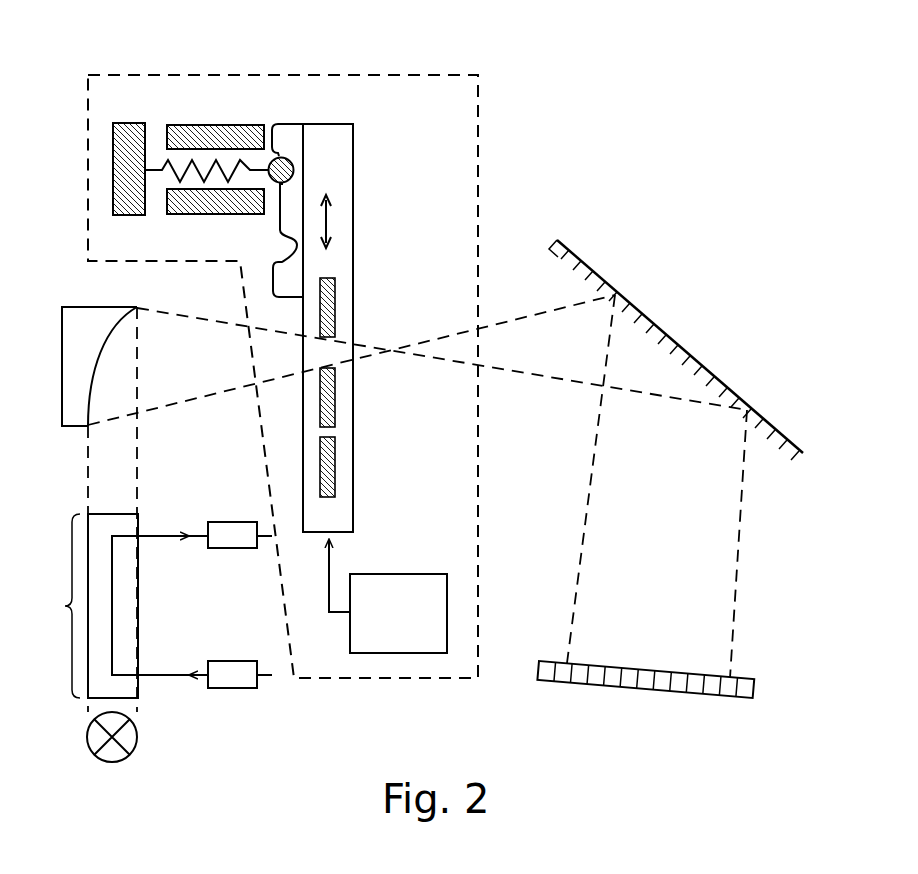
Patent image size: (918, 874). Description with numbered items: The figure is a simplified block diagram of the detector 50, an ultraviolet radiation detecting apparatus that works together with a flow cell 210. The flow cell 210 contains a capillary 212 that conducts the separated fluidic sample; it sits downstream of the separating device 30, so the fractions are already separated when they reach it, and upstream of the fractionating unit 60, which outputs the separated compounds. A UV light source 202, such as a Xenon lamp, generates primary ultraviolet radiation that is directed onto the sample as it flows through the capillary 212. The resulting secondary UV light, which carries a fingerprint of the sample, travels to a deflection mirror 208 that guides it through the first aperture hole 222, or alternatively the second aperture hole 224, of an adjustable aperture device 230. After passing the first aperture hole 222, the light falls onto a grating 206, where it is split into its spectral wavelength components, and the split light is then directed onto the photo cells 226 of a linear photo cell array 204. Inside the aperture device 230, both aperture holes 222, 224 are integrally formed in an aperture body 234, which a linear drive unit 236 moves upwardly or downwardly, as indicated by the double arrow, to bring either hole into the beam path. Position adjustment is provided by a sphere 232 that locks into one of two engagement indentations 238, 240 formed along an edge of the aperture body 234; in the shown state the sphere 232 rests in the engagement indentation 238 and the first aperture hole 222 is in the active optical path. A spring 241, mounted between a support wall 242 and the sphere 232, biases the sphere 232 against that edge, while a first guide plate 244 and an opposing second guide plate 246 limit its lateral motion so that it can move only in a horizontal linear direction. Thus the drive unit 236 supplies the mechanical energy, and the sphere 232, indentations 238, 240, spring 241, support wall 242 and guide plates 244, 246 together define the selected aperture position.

The aperture device 230 is at (480, 88).
The support wall 242 is at (123, 155).
The first guide plate 244 is at (249, 132).
The second guide plate 246 is at (177, 212).
The spring 241 is at (189, 160).
The sphere 232 is at (288, 160).
The engagement indentation 238 is at (302, 170).
The engagement indentation 240 is at (292, 252).
The first aperture hole 222 is at (323, 350).
The second aperture hole 224 is at (330, 432).
The aperture body 234 is at (353, 467).
The linear drive unit 236 is at (413, 574).
The deflection mirror 208 is at (83, 330).
The detector 50 is at (676, 321).
The grating 206 is at (687, 350).
The linear photo cell array 204 is at (735, 672).
The photo cells 226 is at (562, 683).
The flow cell 210 is at (80, 606).
The capillary 212 is at (113, 592).
The fractionating unit 60 is at (233, 522).
The separating device 30 is at (248, 661).
The UV light source 202 is at (137, 733).